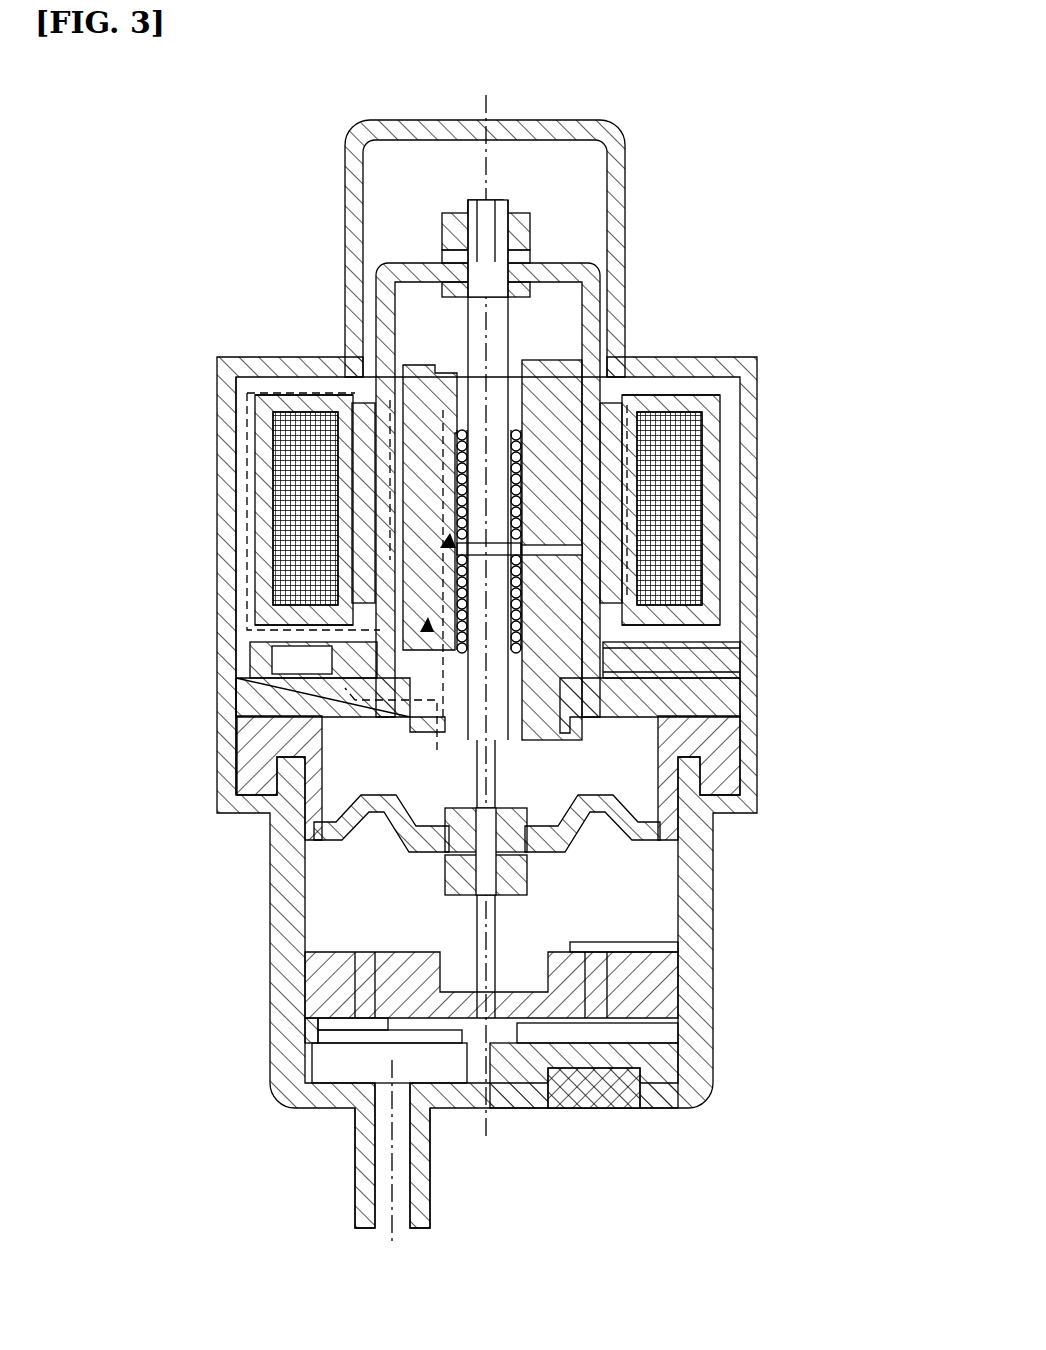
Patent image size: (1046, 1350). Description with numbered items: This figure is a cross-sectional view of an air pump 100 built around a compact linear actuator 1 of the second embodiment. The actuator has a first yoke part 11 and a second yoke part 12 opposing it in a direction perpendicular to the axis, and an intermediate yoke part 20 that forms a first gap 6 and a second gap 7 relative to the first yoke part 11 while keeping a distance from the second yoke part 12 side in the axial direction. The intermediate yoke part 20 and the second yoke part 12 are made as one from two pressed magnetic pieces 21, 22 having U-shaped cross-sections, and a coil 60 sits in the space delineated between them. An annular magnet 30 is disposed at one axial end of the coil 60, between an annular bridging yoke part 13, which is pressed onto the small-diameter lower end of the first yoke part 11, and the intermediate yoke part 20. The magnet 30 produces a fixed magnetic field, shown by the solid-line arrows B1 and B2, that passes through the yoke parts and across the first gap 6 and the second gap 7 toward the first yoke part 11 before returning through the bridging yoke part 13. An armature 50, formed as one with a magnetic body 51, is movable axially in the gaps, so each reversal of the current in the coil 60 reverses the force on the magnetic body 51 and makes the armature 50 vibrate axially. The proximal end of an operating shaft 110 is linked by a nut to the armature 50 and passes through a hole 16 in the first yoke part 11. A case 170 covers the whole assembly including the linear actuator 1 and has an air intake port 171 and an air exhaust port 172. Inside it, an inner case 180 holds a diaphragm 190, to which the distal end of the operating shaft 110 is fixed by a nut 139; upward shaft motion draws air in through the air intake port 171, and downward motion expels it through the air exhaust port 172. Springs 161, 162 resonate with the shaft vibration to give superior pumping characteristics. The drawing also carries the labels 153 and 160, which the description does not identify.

The air pump 100 is at (195, 205).
The linear actuator 1 is at (757, 377).
The armature 50 is at (410, 266).
The nut 153 is at (522, 213).
The operating shaft 110 is at (508, 327).
The first gap 6 is at (412, 398).
The first yoke part 11 is at (540, 367).
The magnetic body 51 is at (518, 398).
The second gap 7 is at (462, 582).
The intermediate yoke part 20 is at (262, 400).
The magnetic piece 21 is at (250, 423).
The magnetic piece 22 is at (240, 520).
The second yoke part 12 is at (240, 456).
The coil 60 is at (285, 410).
The hole 16 is at (640, 540).
The spring 161 is at (600, 422).
The yoke 160 is at (503, 430).
The spring 162 is at (262, 632).
The magnet 30 is at (252, 688).
The bridging yoke part 13 is at (240, 755).
The diaphragm 190 is at (660, 840).
The nut 139 is at (445, 878).
The inner case 180 is at (672, 995).
The case 170 is at (713, 1097).
The air intake port 171 is at (593, 1053).
The air exhaust port 172 is at (412, 1193).
The solid-line arrow B1 is at (320, 385).
The solid-line arrow B2 is at (427, 640).